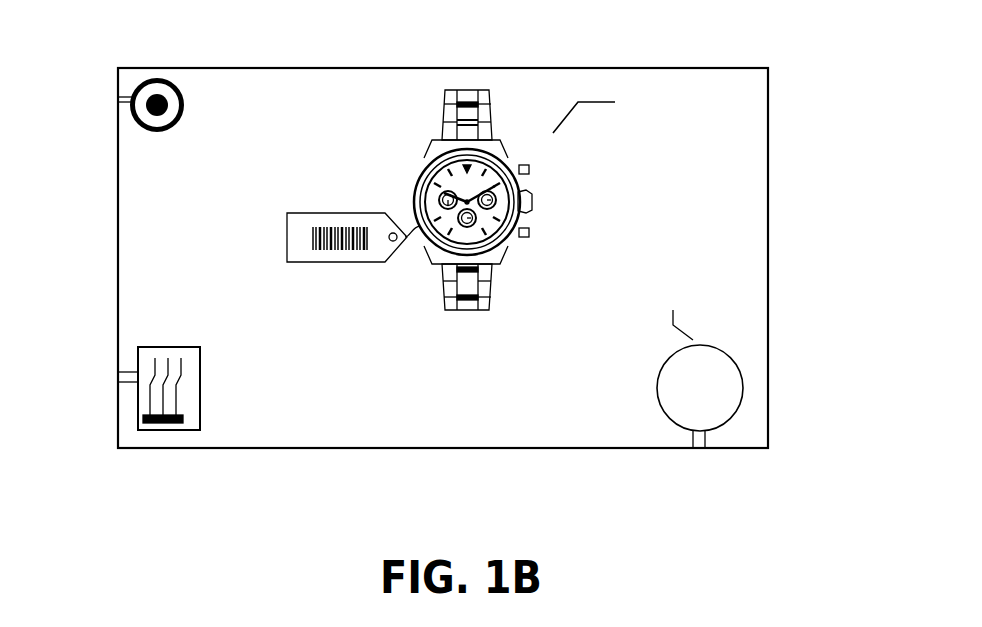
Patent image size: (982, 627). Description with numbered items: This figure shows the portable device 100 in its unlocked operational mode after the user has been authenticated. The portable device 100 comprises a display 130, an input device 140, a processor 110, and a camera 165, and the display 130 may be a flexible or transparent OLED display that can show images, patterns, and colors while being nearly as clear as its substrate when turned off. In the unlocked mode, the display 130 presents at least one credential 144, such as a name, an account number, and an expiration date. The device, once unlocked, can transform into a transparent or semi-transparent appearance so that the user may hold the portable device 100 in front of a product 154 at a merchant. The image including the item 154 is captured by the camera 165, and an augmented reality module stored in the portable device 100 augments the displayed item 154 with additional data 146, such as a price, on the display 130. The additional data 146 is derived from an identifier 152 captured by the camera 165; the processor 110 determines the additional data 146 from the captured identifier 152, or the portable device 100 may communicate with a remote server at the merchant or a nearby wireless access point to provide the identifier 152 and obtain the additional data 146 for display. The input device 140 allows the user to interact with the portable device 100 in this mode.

The portable device 100 is at (118, 222).
The processor 110 is at (190, 422).
The display 130 is at (722, 210).
The input device 140 is at (682, 410).
The credential 144 is at (462, 420).
The additional data 146 is at (722, 105).
The identifier 152 is at (293, 255).
The product 154 is at (537, 197).
The camera 165 is at (150, 90).